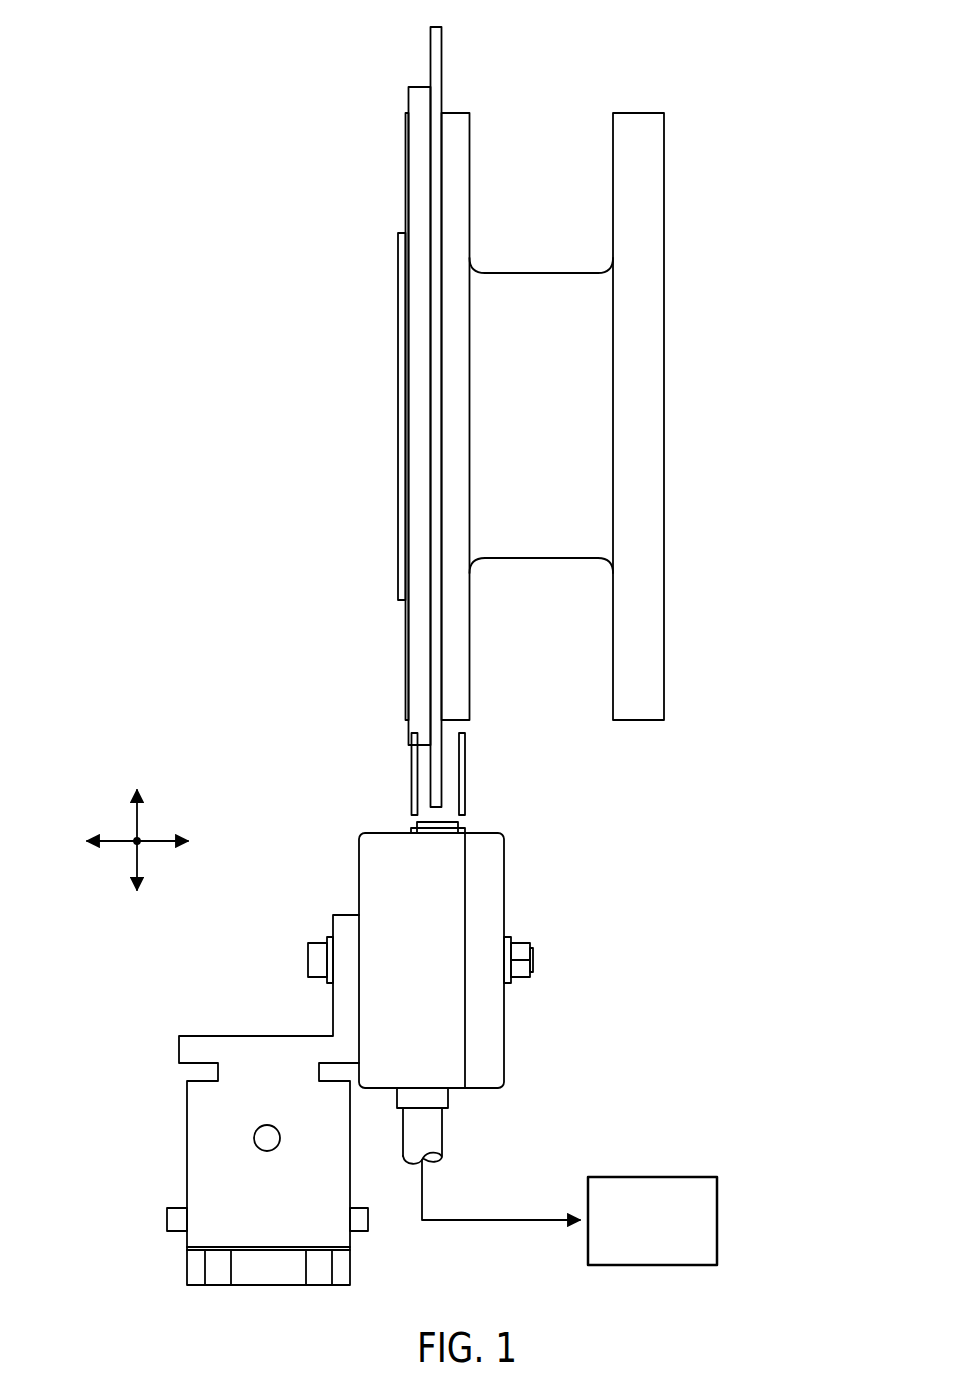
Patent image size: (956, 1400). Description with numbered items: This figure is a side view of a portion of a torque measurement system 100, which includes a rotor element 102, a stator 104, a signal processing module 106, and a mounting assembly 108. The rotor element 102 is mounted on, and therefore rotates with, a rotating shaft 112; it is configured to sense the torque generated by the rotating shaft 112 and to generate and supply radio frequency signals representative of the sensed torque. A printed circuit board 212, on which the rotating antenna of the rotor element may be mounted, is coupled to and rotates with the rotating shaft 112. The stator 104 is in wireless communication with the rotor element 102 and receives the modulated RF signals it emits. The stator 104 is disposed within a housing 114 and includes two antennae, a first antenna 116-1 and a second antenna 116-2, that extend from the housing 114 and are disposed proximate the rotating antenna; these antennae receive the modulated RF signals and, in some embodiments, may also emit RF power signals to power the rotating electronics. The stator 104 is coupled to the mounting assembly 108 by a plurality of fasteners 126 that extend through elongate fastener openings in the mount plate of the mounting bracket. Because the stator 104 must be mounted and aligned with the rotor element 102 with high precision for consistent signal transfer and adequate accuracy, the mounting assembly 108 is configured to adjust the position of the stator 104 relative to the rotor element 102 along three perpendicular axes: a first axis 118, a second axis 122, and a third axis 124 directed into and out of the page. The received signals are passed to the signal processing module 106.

The torque measurement system 100 is at (138, 155).
The rotor element 102 is at (418, 64).
The printed circuit board 212 is at (436, 27).
The rotating shaft 112 is at (538, 273).
The stator 104 is at (520, 847).
The housing 114 is at (422, 972).
The first antenna 116-1 is at (465, 782).
The second antenna 116-2 is at (411, 780).
The fasteners 126 is at (308, 960).
The mounting assembly 108 is at (203, 1015).
The signal processing module 106 is at (653, 1177).
The first axis 118 is at (135, 810).
The second axis 122 is at (168, 839).
The third axis 124 is at (139, 843).